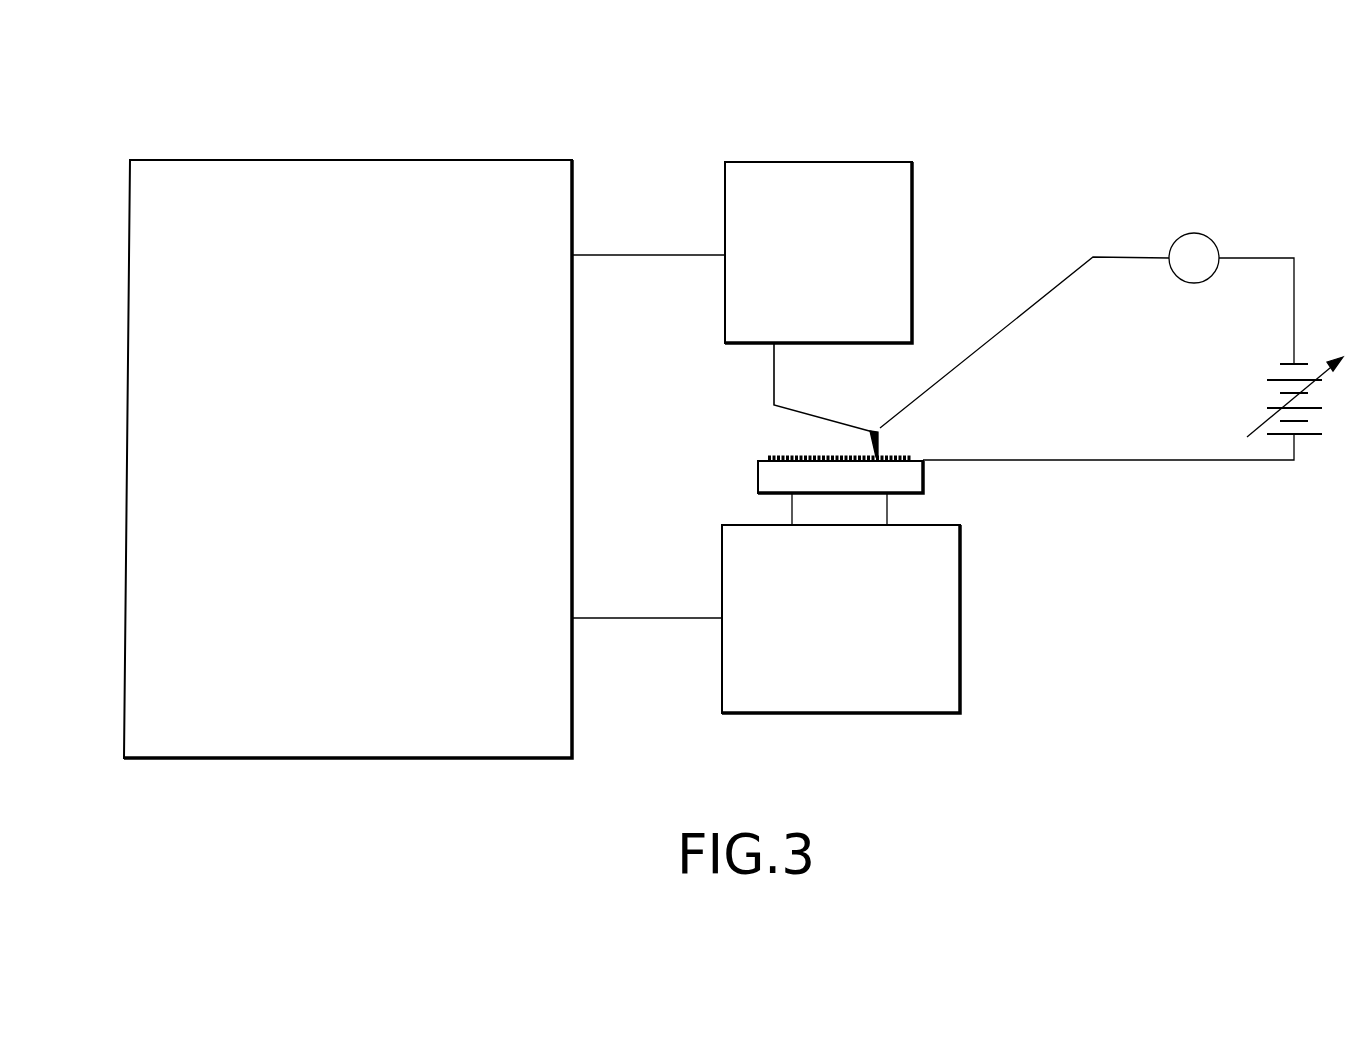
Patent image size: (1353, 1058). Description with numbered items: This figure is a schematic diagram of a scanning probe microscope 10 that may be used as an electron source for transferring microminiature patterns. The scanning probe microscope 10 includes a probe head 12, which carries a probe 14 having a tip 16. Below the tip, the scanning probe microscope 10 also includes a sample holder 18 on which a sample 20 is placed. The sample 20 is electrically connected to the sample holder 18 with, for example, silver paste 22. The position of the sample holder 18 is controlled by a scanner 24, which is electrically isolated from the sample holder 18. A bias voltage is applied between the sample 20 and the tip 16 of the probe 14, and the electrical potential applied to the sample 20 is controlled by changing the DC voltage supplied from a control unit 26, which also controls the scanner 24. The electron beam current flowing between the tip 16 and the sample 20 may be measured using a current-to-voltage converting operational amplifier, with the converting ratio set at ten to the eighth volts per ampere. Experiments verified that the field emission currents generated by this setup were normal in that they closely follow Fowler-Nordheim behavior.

The scanning probe microscope 10 is at (703, 125).
The probe head 12 is at (805, 162).
The probe 14 is at (830, 418).
The tip 16 is at (880, 443).
The sample holder 18 is at (925, 473).
The sample 20 is at (802, 460).
The silver paste 22 is at (802, 463).
The scanner 24 is at (938, 717).
The control unit 26 is at (338, 158).